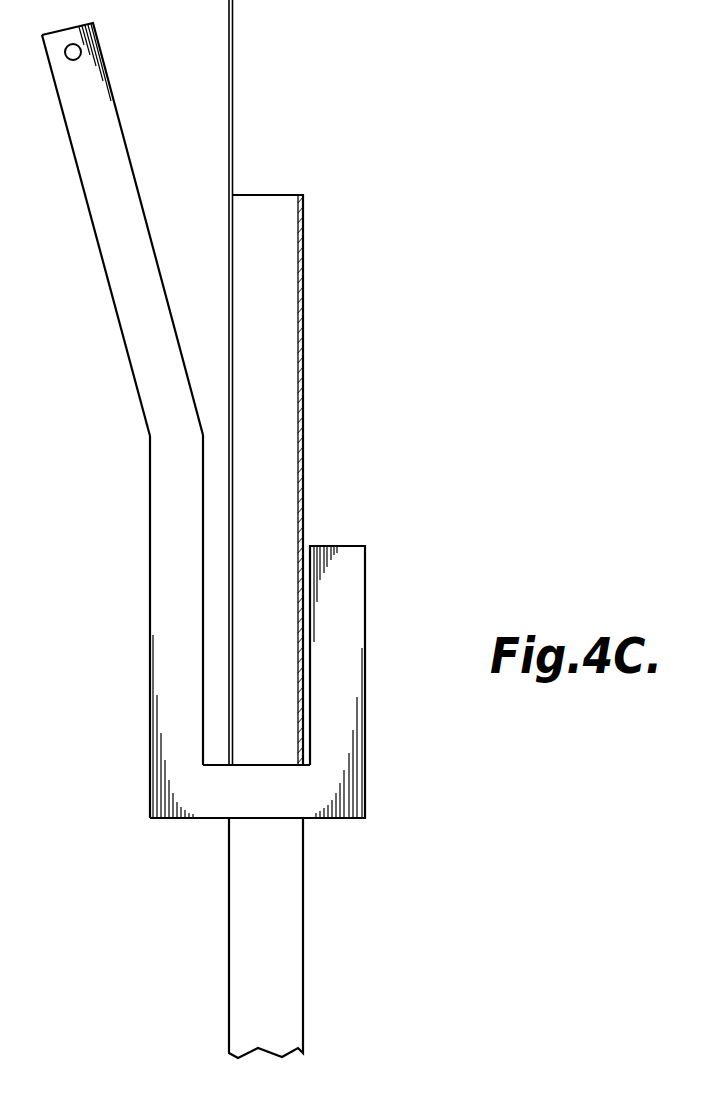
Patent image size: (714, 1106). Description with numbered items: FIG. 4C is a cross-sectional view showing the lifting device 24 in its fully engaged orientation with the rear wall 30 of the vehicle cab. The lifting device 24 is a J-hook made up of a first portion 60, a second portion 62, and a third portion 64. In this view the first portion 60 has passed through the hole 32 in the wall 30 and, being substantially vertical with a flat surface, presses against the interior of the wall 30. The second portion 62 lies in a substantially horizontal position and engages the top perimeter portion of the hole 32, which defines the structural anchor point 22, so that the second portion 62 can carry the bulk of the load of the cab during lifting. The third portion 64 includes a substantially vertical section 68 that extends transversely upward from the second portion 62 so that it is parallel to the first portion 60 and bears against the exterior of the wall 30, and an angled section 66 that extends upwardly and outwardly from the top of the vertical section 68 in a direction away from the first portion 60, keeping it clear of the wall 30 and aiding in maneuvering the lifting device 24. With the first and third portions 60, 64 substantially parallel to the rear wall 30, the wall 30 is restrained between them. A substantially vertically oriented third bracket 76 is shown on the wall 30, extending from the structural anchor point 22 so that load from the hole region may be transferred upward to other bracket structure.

The lifting device 24 is at (162, 116).
The angled section 66 is at (100, 250).
The substantially vertical section 68 is at (148, 475).
The third portion 64 is at (150, 643).
The first portion 60 is at (365, 710).
The second portion 62 is at (257, 820).
The structural anchor point 22 is at (230, 765).
The wall 30 is at (229, 255).
The third bracket 76 is at (303, 303).
The hole 32 is at (283, 915).